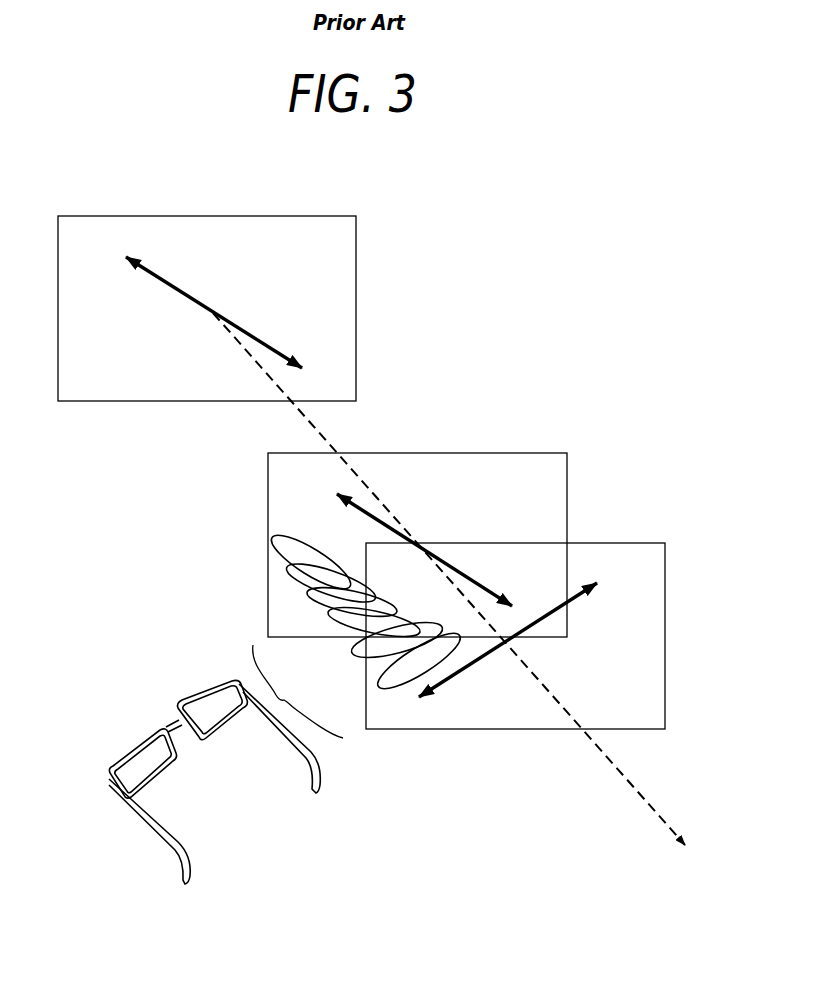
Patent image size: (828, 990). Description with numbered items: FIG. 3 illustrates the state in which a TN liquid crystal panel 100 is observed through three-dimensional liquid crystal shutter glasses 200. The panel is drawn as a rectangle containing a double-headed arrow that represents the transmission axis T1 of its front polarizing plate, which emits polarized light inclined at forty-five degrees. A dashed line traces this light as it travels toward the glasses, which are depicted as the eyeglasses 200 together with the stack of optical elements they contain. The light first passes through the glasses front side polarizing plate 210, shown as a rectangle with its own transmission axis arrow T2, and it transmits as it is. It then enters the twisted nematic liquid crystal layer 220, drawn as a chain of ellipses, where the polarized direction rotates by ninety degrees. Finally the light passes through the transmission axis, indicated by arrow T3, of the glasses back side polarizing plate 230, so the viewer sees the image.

The TN liquid crystal panel 100 is at (255, 238).
The transmission axis T1 is at (170, 288).
The glasses front side polarizing plate 210 is at (455, 465).
The glasses back side polarizing plate 230 is at (485, 713).
The second tracking direction arrow T2 is at (466, 574).
The third tracking direction arrow T3 is at (547, 620).
The twisted nematic liquid crystal layer 220 is at (293, 592).
The liquid crystal shutter glasses for 3D 200 is at (178, 705).